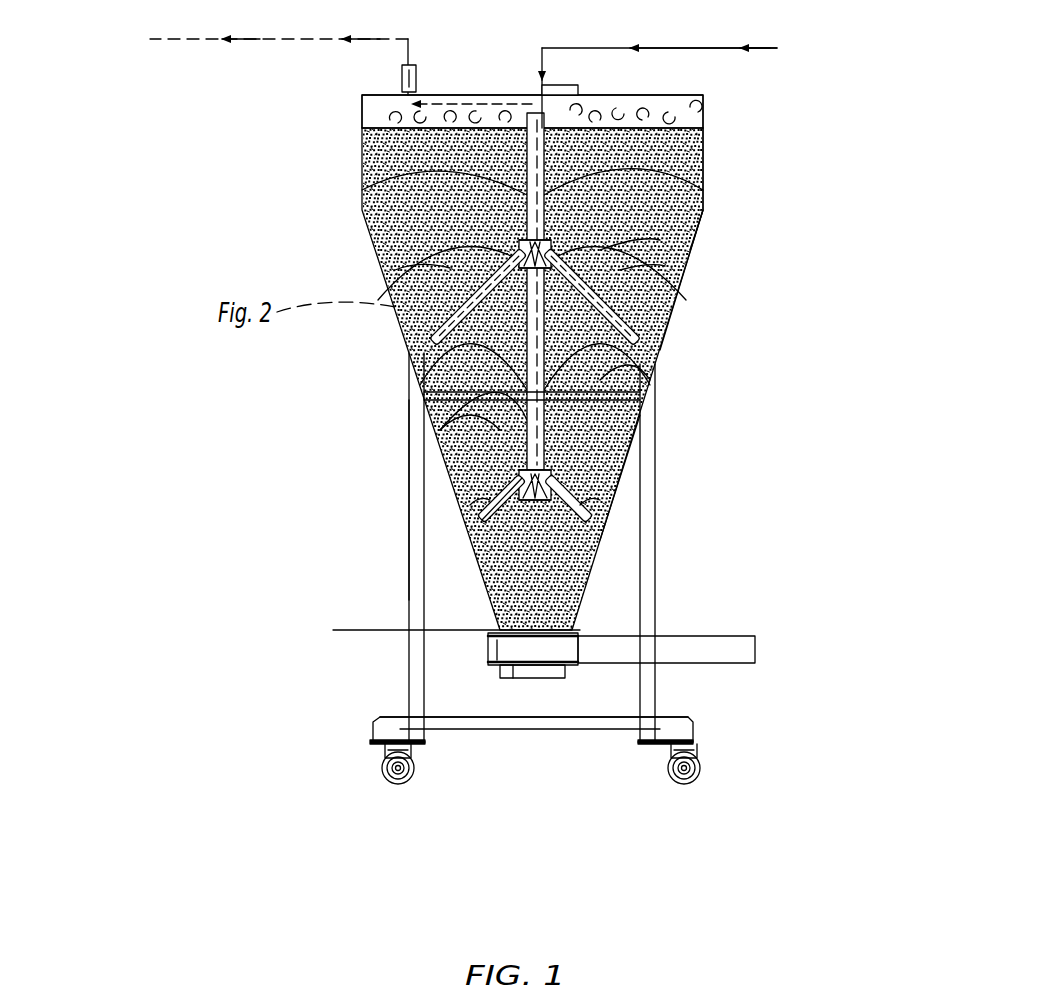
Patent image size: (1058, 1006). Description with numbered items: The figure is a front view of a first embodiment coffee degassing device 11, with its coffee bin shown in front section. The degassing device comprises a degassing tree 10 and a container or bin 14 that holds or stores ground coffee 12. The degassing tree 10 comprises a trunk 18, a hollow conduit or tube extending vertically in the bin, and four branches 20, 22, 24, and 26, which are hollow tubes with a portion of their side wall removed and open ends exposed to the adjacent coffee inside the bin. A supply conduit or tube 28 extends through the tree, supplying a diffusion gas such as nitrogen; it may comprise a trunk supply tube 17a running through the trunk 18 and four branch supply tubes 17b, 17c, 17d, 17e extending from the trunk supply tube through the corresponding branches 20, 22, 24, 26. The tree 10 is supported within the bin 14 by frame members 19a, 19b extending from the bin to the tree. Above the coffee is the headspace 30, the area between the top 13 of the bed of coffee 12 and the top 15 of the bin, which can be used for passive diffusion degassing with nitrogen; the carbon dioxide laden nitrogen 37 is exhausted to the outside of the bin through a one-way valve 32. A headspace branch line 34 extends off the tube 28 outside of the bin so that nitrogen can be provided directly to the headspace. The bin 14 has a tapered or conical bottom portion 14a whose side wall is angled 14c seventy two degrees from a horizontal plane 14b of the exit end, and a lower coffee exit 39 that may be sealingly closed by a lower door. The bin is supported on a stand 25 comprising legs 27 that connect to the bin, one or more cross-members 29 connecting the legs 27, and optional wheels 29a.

The degassing tree 10 is at (376, 243).
The degassing device 11 is at (858, 113).
The ground coffee 12 is at (702, 180).
The top of the bed of coffee 13 is at (365, 118).
The bin 14 is at (667, 305).
The tapered bottom portion 14a is at (605, 455).
The horizontal plane of the exit end 14b is at (380, 632).
The angle of tapered side wall 14c is at (447, 488).
The top of the bin 15 is at (372, 93).
The trunk supply tube 17a is at (655, 240).
The branch supply tube 17b is at (397, 270).
The branch supply tube 17c is at (660, 266).
The branch supply tube 17d is at (445, 500).
The branch supply tube 17e is at (582, 520).
The trunk 18 is at (362, 186).
The frame member 19a is at (440, 430).
The frame member 19b is at (628, 372).
The branch 20 is at (425, 385).
The branch 22 is at (655, 335).
The branch 24 is at (445, 468).
The stand 25 is at (682, 572).
The branch 26 is at (620, 492).
The legs 27 is at (419, 590).
The supply tube 28 is at (540, 48).
The cross-member 29 is at (562, 720).
The wheels 29a is at (380, 775).
The headspace 30 is at (645, 110).
The one-way valve 32 is at (416, 75).
The headspace branch line 34 is at (575, 90).
The carbon dioxide laden nitrogen 37 is at (300, 45).
The lower coffee exit 39 is at (530, 675).